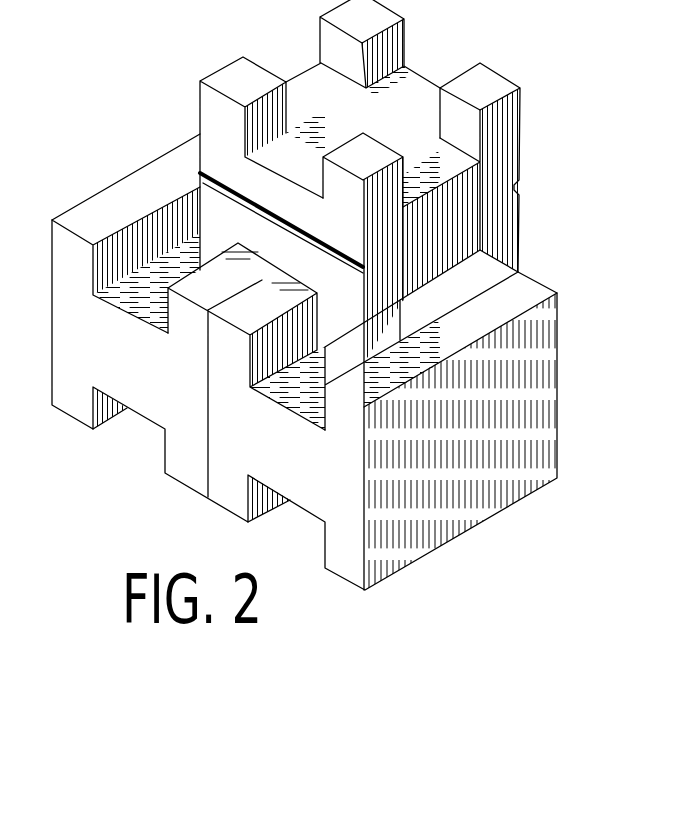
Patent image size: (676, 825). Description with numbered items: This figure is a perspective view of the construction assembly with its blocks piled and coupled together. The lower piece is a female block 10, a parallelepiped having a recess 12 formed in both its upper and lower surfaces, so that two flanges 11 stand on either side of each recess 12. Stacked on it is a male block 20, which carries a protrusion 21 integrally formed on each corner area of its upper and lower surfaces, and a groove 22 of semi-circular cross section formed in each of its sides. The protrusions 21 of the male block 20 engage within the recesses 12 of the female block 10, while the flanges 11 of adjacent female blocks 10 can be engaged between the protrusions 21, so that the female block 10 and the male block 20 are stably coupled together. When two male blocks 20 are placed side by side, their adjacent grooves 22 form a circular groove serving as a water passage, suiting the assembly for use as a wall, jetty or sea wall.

The female block 10 is at (332, 351).
The flange 11 is at (237, 317).
The recess 12 is at (145, 235).
The male block 20 is at (358, 215).
The protrusion 21 is at (493, 82).
The groove 22 is at (197, 178).